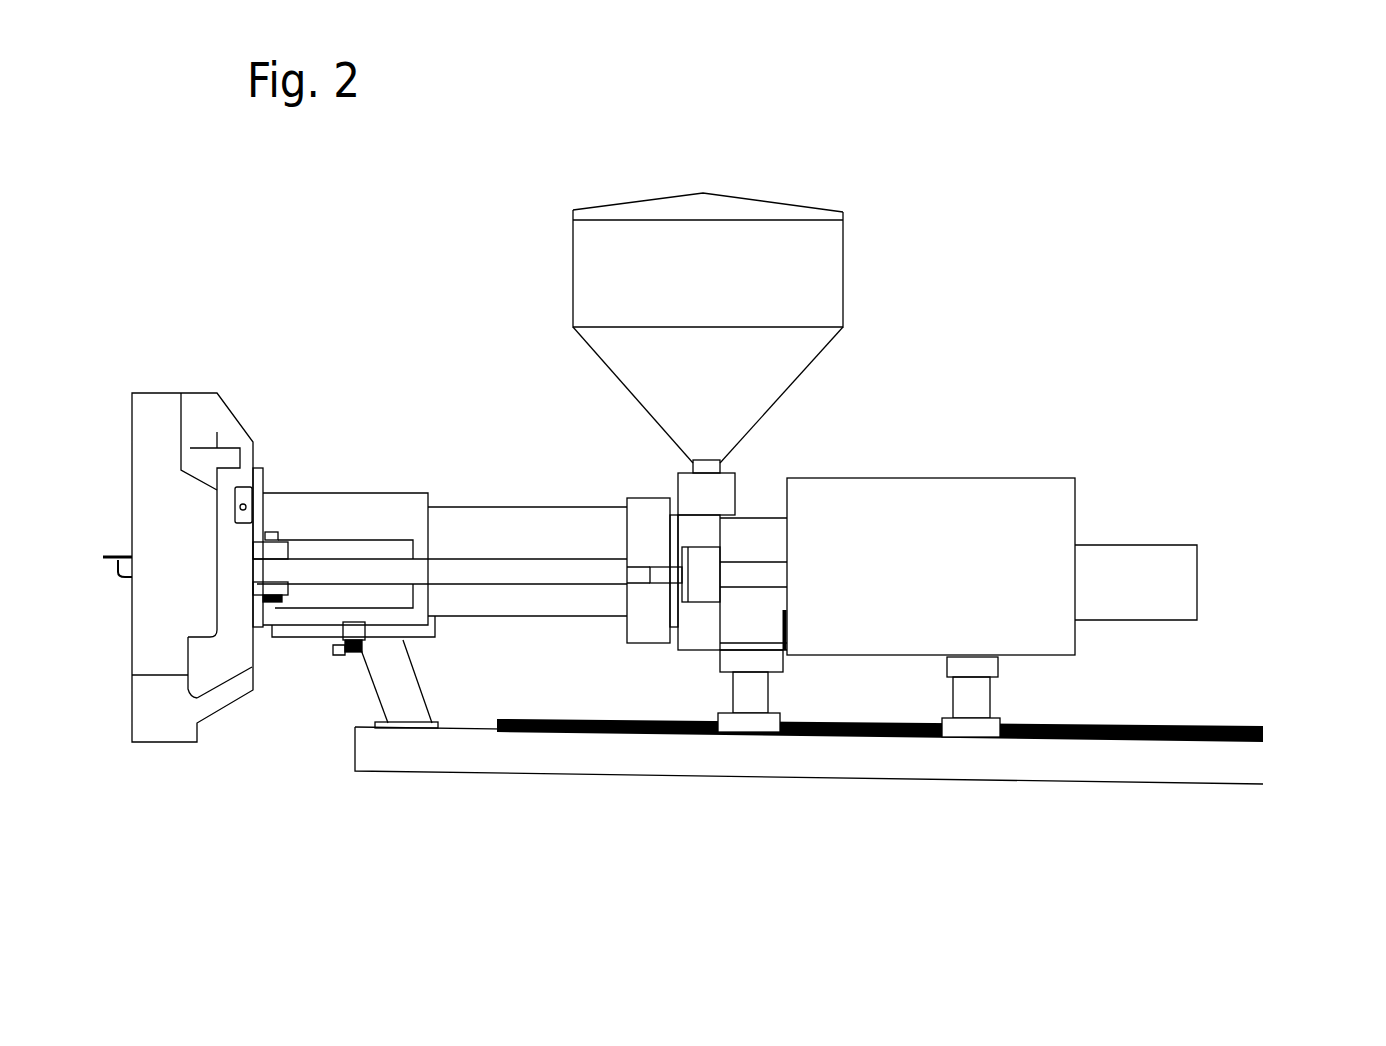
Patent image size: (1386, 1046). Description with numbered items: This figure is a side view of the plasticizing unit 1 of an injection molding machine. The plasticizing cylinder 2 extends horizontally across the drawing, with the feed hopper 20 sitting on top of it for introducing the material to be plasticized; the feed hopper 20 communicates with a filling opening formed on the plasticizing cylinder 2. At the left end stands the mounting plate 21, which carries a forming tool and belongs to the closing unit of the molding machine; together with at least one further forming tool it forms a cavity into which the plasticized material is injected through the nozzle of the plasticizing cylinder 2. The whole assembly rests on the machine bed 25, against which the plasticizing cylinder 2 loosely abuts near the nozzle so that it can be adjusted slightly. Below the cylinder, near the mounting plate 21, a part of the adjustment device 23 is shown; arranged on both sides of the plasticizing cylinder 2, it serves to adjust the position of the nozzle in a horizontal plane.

The plasticizing unit 1 is at (1257, 269).
The plasticizing cylinder 2 is at (512, 537).
The feed hopper 20 is at (812, 310).
The mounting plate 21 is at (198, 415).
The adjustment device 23 is at (323, 652).
The machine bed 25 is at (633, 748).